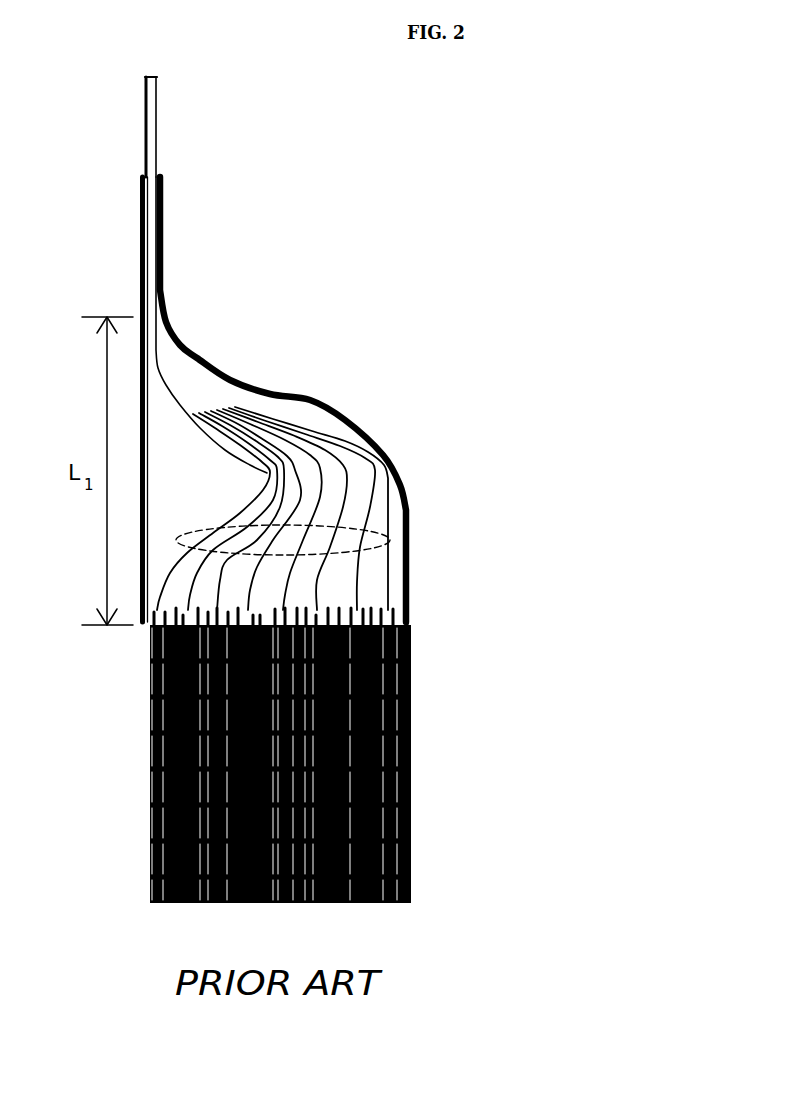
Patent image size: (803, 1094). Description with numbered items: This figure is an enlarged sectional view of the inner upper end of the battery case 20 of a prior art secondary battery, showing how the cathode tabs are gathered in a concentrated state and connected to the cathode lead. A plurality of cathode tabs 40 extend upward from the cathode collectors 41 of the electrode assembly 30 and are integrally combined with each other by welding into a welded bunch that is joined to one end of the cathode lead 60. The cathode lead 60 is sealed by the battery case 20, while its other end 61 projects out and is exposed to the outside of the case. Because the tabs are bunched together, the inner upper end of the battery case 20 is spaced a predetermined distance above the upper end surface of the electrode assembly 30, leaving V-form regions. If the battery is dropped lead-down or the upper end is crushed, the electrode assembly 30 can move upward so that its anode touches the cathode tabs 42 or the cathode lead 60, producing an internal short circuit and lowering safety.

The battery case 20 is at (310, 400).
The electrode assembly 30 is at (408, 906).
The cathode tabs 40 is at (390, 540).
The cathode collectors 41 is at (140, 680).
The cathode tabs 42 is at (387, 580).
The cathode lead 60 is at (157, 323).
The other end of the cathode lead 61 is at (157, 137).